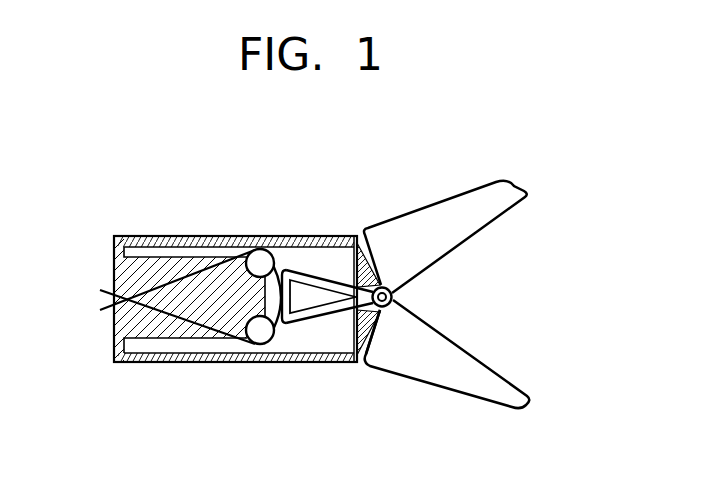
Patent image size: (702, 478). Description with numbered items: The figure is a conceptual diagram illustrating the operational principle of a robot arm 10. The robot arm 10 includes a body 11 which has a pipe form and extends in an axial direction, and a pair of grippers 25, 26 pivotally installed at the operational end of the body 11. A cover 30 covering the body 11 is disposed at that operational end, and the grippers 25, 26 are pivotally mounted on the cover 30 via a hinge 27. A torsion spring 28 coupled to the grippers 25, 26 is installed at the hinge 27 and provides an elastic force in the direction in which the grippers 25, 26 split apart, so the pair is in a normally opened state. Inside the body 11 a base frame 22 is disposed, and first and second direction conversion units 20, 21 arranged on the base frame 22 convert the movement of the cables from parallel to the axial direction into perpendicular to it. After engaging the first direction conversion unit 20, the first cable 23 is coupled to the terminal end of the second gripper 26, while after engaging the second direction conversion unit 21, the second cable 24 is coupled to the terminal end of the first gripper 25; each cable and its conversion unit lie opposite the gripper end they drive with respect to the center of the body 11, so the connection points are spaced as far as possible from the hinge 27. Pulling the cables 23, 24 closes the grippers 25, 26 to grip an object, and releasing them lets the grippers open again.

The robot arm 10 is at (85, 199).
The body 11 is at (302, 356).
The first direction conversion unit 20 is at (262, 262).
The second direction conversion unit 21 is at (254, 335).
The base frame 22 is at (122, 323).
The first cable 23 is at (182, 277).
The second cable 24 is at (172, 327).
The first gripper 25 is at (522, 192).
The second gripper 26 is at (524, 405).
The hinge 27 is at (393, 296).
The torsion spring 28 is at (388, 306).
The cover 30 is at (372, 310).